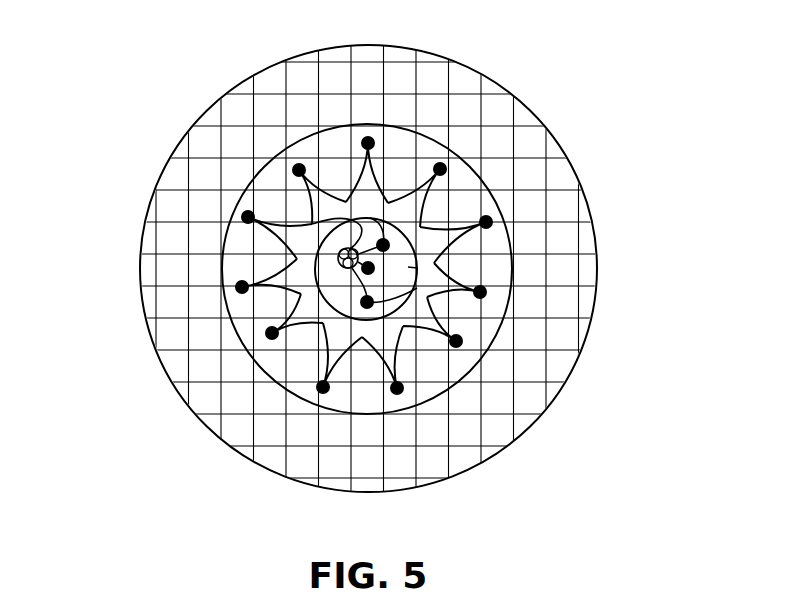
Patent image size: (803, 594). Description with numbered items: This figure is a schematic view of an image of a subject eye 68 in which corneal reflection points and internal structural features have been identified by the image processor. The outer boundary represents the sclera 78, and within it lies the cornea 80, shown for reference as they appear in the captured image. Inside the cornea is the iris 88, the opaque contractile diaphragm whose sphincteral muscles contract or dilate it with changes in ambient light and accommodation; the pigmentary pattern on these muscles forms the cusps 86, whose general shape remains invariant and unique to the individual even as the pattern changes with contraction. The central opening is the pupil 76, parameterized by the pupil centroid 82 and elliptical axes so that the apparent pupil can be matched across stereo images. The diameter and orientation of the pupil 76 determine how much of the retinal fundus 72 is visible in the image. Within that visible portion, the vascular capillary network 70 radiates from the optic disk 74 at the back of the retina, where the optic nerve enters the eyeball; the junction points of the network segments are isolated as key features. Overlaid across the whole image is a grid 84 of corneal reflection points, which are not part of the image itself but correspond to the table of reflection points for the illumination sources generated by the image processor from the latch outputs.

The subject eye 68 is at (476, 73).
The vascular capillary network 70 is at (401, 284).
The retinal fundus 72 is at (437, 262).
The optic disk 74 is at (340, 265).
The pupil 76 is at (312, 224).
The sclera 78 is at (126, 264).
The cornea 80 is at (472, 202).
The pupil centroid 82 is at (367, 302).
The overlaid grid 84 is at (455, 440).
The cusps 86 is at (493, 293).
The iris 88 is at (229, 201).